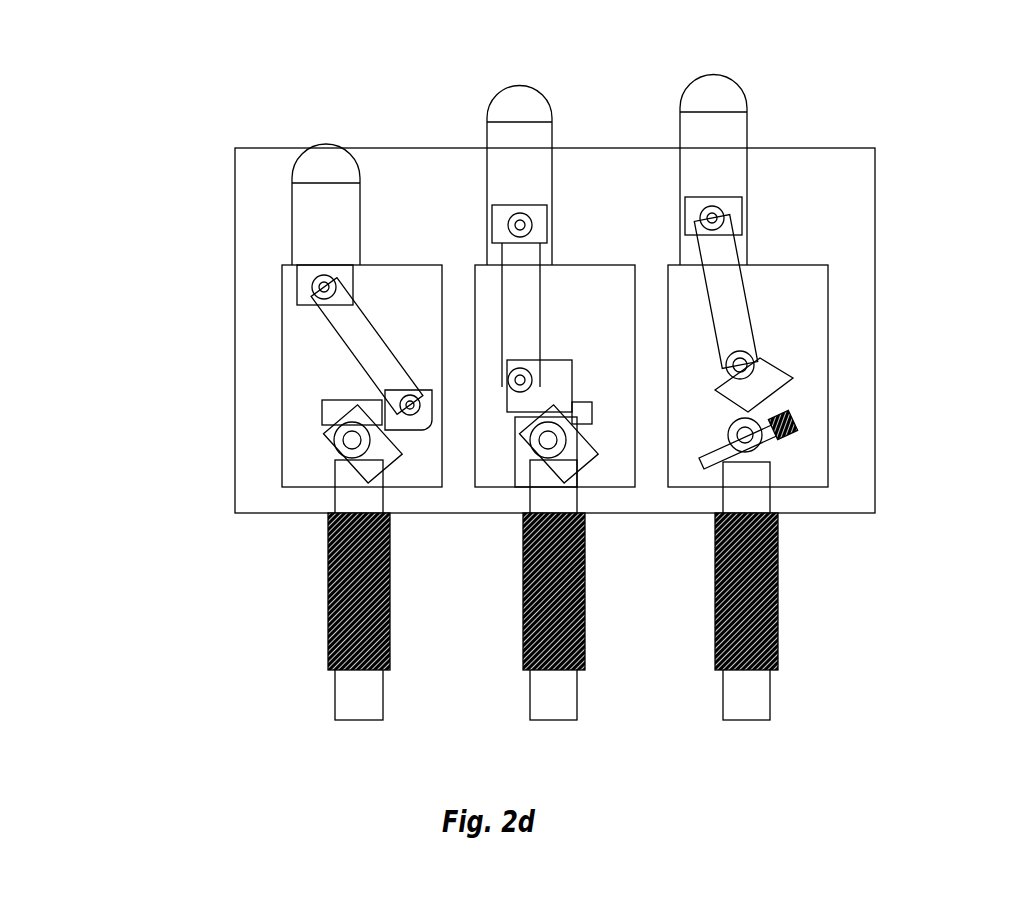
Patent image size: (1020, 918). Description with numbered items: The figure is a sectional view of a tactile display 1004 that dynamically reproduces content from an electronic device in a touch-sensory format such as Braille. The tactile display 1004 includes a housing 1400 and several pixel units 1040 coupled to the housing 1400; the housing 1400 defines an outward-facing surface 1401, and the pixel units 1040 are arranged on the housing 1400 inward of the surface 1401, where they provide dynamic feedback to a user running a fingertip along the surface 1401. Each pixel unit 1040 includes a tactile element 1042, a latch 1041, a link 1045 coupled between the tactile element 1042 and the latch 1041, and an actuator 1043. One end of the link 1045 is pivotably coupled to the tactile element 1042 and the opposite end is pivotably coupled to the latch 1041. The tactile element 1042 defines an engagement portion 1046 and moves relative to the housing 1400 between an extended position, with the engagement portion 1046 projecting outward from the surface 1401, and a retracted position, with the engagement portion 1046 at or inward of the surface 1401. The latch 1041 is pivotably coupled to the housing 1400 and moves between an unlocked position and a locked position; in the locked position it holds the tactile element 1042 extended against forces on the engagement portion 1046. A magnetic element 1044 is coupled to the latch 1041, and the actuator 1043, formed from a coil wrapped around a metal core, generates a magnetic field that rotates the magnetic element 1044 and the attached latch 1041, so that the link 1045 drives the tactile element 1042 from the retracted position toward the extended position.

The tactile display 1004 is at (188, 132).
The housing 1400 is at (420, 165).
The outward-facing surface 1401 is at (457, 148).
The tactile element 1042 is at (677, 112).
The engagement portion 1046 is at (736, 88).
The pixel unit 1040 is at (773, 271).
The link 1045 is at (753, 312).
The latch 1041 is at (333, 399).
The magnetic element 1044 is at (358, 419).
The actuator 1043 is at (326, 595).